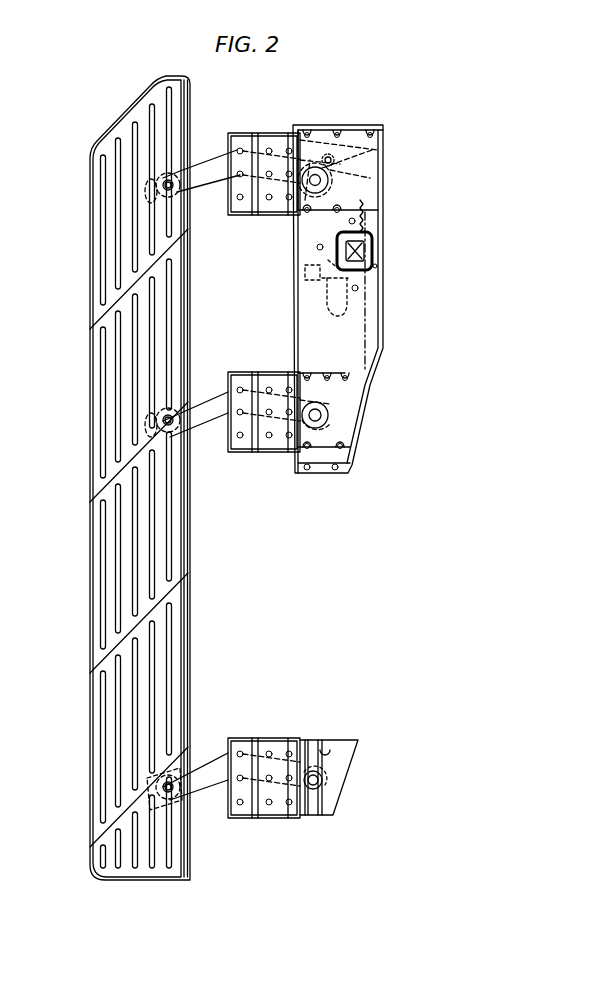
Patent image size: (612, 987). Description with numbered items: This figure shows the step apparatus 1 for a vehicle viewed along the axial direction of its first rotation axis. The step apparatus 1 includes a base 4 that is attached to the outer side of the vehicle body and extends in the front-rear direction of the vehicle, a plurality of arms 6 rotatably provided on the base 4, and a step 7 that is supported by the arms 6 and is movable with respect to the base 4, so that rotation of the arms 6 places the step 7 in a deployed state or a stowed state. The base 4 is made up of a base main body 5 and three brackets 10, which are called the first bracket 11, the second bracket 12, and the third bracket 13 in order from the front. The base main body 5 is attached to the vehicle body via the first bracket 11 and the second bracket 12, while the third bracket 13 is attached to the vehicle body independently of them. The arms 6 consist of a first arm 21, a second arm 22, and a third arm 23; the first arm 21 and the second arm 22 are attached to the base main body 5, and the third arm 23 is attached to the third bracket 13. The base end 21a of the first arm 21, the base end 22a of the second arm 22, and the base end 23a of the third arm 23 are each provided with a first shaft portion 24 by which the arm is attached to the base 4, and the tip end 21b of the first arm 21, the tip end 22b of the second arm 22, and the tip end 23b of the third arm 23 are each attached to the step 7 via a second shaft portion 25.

The step apparatus for a vehicle 1 is at (456, 105).
The base 4 is at (379, 299).
The base main body 5 is at (385, 268).
The arms 6 is at (261, 481).
The step 7 is at (92, 456).
The brackets 10 is at (380, 470).
The first bracket 11 is at (385, 164).
The second bracket 12 is at (345, 402).
The third bracket 13 is at (320, 762).
The first arm 21 is at (261, 185).
The base end of the first arm 21a is at (320, 132).
The tip end of the first arm 21b is at (170, 200).
The second arm 22 is at (246, 428).
The base end of the second arm 22a is at (315, 373).
The tip end of the second arm 22b is at (172, 435).
The third arm 23 is at (235, 784).
The base end of the third arm 23a is at (303, 820).
The tip end of the third arm 23b is at (180, 800).
The first shaft portion 24 is at (290, 206).
The second shaft portion 25 is at (174, 194).